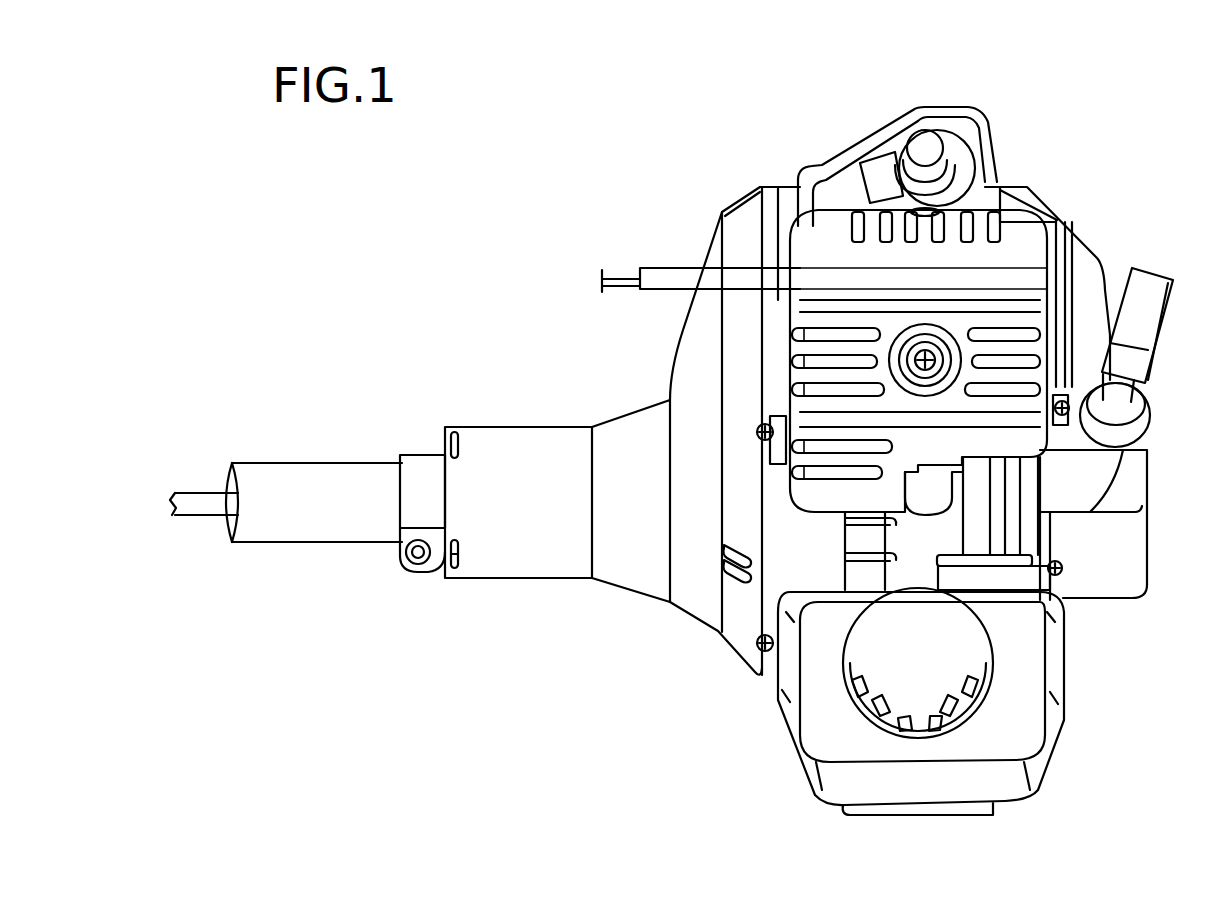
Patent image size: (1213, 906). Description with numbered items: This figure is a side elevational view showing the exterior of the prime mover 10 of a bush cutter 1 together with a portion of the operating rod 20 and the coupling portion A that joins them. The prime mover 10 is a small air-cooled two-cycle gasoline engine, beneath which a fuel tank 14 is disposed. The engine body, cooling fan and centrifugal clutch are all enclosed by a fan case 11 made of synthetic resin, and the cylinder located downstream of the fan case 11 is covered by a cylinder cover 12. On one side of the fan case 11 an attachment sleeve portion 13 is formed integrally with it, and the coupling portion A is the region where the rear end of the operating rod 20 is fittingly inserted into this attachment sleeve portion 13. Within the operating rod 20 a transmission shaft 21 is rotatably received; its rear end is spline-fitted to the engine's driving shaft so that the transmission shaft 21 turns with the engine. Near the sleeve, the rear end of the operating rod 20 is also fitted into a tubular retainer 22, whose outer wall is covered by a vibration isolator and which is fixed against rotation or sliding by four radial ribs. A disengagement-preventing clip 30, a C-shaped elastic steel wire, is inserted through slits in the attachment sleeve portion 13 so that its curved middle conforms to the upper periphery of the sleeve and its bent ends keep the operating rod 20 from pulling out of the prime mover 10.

The bush cutter 1 is at (563, 155).
The prime mover 10 is at (1097, 225).
The fan case 11 is at (733, 196).
The cylinder cover 12 is at (1024, 183).
The attachment sleeve portion 13 is at (518, 420).
The fuel tank 14 is at (1040, 752).
The operating rod 20 is at (288, 462).
The transmission shaft 21 is at (197, 493).
The tubular retainer 22 is at (418, 468).
The disengagement-preventing clip 30 is at (454, 420).
The coupling portion A is at (507, 612).